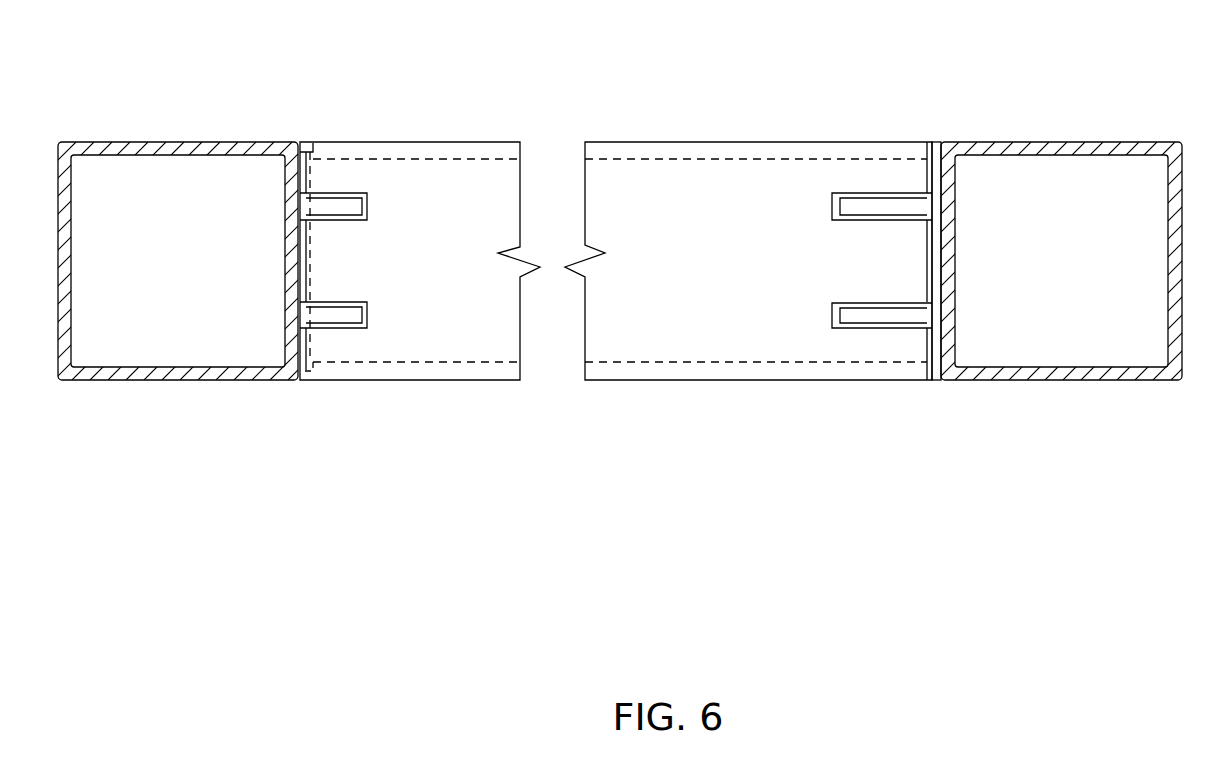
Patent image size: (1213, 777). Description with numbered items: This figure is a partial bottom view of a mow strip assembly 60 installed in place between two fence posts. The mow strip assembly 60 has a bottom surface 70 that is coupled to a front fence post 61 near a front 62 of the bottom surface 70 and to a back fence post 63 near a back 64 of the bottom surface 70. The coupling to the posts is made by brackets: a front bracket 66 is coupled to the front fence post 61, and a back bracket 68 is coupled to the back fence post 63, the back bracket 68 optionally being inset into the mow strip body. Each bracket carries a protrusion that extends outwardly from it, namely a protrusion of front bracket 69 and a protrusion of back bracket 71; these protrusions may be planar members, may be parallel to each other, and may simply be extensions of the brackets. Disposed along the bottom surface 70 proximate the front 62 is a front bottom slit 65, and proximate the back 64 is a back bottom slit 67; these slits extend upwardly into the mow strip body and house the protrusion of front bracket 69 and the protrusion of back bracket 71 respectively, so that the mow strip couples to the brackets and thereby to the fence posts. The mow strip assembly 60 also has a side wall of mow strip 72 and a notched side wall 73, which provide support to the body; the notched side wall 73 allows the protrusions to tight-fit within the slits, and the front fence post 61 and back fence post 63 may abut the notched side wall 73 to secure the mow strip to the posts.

The mow strip assembly 60 is at (652, 72).
The front fence post 61 is at (1045, 142).
The front 62 is at (908, 427).
The back fence post 63 is at (162, 142).
The back 64 is at (278, 410).
The front bottom slit 65 is at (860, 193).
The front bracket 66 is at (930, 142).
The back bottom slit 67 is at (345, 193).
The back bracket 68 is at (299, 142).
The protrusion of front bracket 69 is at (880, 303).
The bottom surface 70 is at (667, 260).
The protrusion of back bracket 71 is at (324, 220).
The side wall of mow strip 72 is at (720, 157).
The notched side wall 73 is at (313, 363).